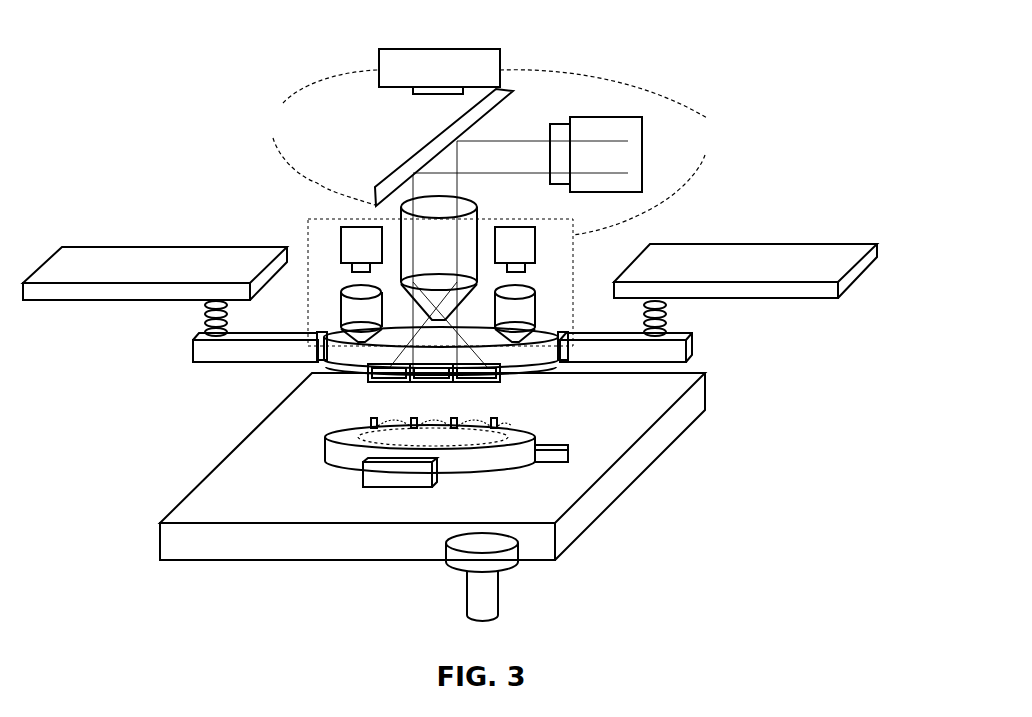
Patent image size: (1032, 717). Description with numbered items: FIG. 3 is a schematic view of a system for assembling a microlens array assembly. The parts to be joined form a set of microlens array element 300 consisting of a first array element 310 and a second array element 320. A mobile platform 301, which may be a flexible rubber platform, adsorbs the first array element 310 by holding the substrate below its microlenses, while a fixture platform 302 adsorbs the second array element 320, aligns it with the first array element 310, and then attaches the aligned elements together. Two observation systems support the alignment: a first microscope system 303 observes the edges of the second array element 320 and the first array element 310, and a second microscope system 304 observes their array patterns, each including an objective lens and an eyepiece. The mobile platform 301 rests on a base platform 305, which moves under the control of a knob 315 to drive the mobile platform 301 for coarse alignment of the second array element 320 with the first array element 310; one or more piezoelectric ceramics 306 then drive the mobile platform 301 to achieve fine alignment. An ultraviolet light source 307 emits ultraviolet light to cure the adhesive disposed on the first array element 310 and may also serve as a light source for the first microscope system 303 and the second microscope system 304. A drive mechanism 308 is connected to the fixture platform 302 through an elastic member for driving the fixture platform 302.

The set of microlens array element 300 is at (143, 386).
The mobile platform 301 is at (537, 436).
The fixture platform 302 is at (545, 362).
The first microscope system 303 is at (495, 152).
The second microscope system 304 is at (392, 127).
The base platform 305 is at (190, 560).
The piezoelectric ceramics 306 is at (417, 488).
The ultraviolet light source 307 is at (598, 116).
The drive mechanism 308 is at (797, 240).
The first array element 310 is at (435, 425).
The knob 315 is at (498, 597).
The second array element 320 is at (375, 378).